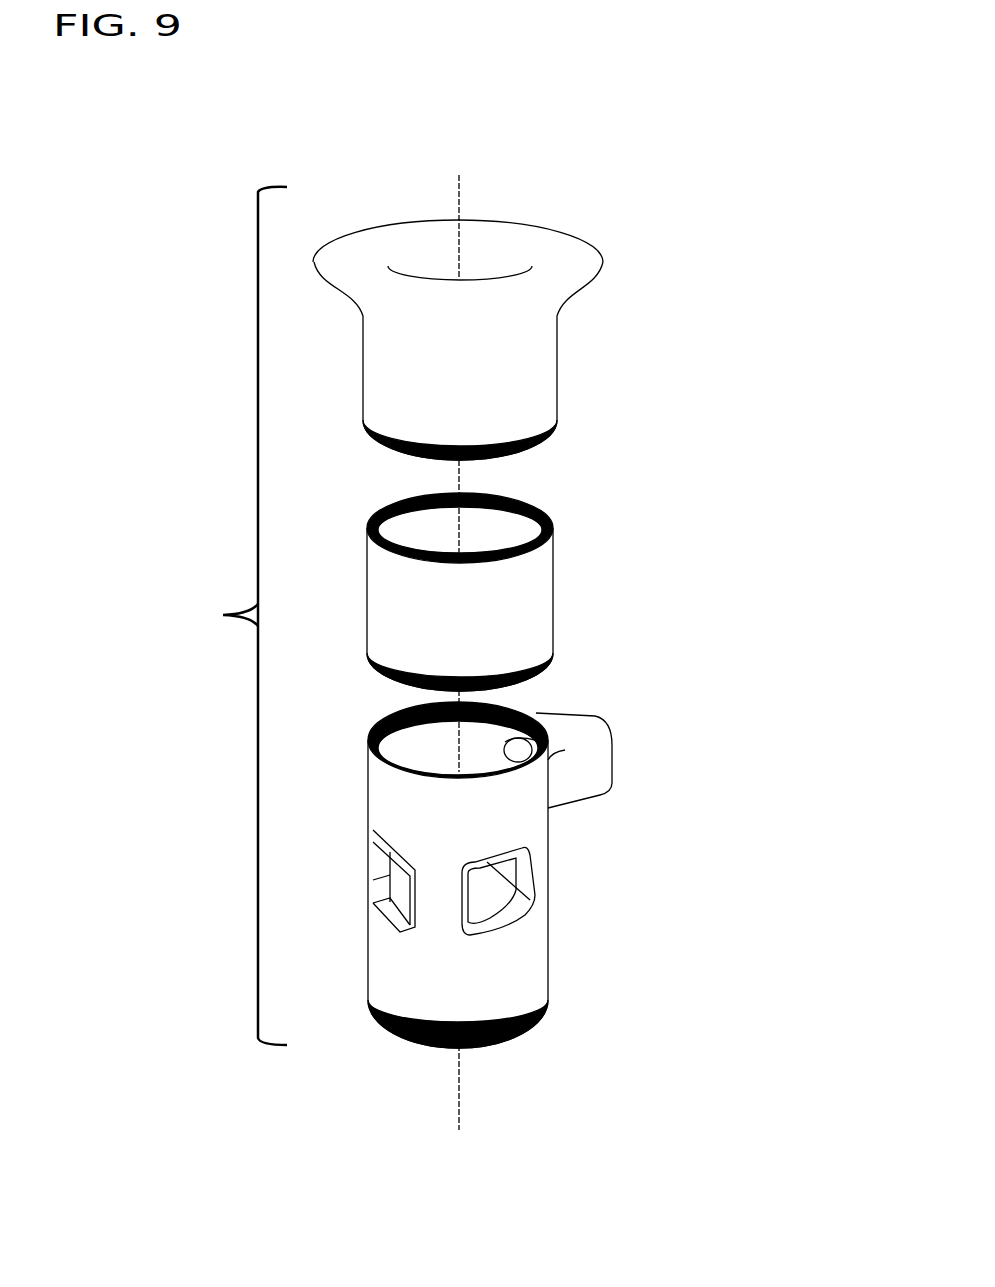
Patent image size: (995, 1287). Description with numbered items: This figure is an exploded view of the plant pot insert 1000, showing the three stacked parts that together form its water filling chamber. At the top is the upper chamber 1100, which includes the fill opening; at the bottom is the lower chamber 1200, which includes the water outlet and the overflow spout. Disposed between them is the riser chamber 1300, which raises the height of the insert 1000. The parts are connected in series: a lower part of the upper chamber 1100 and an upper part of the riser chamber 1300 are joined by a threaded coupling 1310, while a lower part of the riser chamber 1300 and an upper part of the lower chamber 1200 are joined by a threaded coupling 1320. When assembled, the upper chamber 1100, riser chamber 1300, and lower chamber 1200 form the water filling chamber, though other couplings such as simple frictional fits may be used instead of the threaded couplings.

The plant pot insert 1000 is at (500, 1223).
The upper chamber 1100 is at (508, 379).
The lower chamber 1200 is at (498, 987).
The riser chamber 1300 is at (513, 637).
The threaded coupling 1310 is at (510, 445).
The threaded coupling 1320 is at (517, 682).